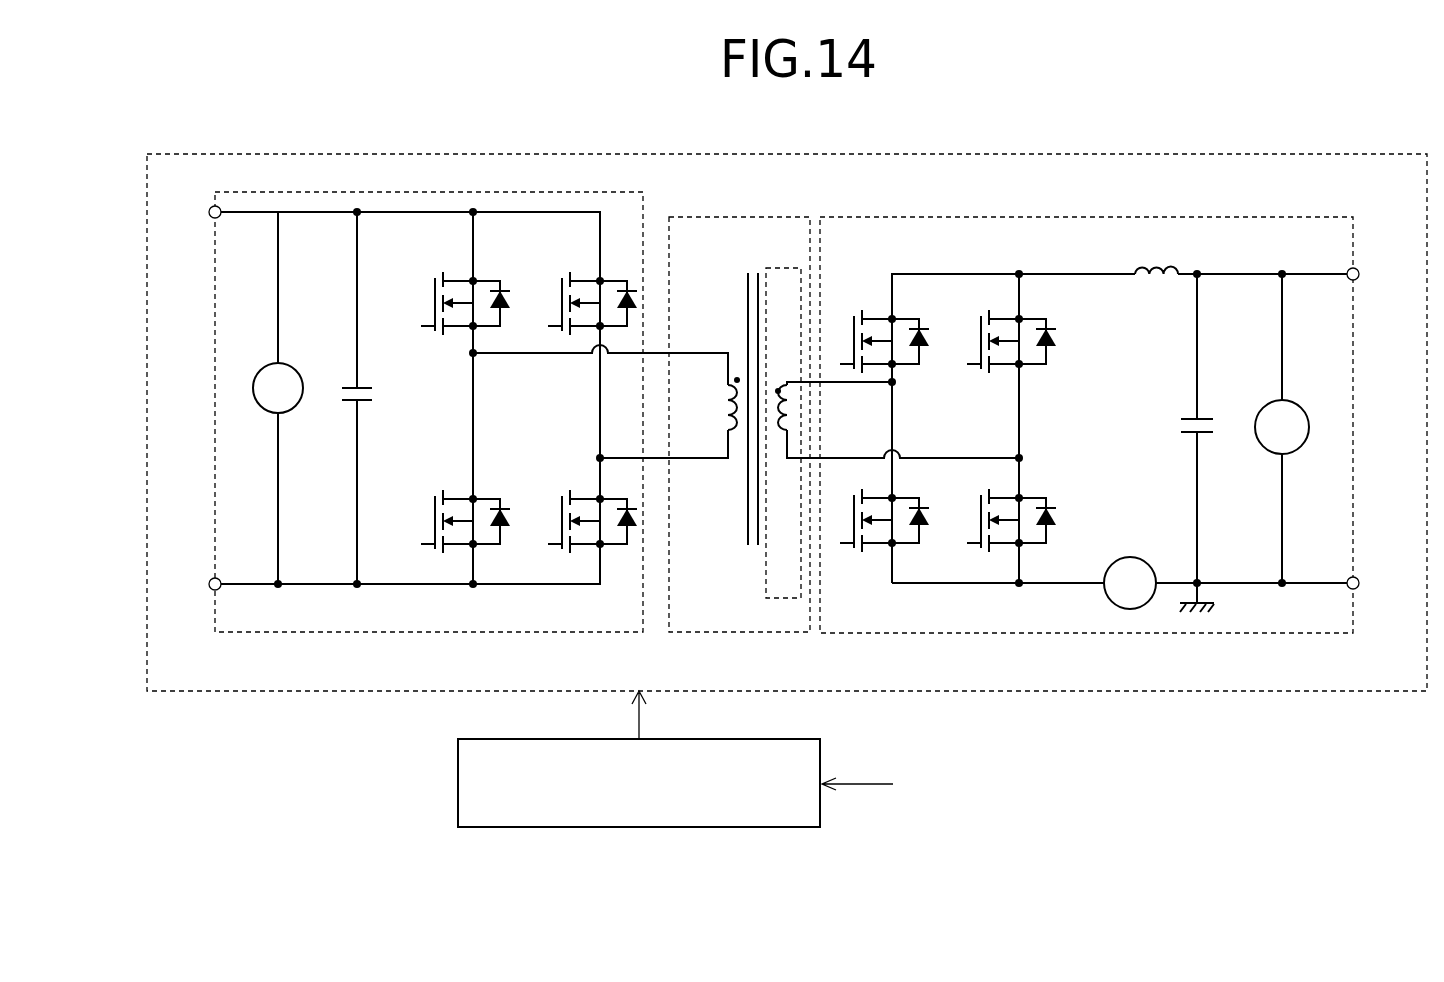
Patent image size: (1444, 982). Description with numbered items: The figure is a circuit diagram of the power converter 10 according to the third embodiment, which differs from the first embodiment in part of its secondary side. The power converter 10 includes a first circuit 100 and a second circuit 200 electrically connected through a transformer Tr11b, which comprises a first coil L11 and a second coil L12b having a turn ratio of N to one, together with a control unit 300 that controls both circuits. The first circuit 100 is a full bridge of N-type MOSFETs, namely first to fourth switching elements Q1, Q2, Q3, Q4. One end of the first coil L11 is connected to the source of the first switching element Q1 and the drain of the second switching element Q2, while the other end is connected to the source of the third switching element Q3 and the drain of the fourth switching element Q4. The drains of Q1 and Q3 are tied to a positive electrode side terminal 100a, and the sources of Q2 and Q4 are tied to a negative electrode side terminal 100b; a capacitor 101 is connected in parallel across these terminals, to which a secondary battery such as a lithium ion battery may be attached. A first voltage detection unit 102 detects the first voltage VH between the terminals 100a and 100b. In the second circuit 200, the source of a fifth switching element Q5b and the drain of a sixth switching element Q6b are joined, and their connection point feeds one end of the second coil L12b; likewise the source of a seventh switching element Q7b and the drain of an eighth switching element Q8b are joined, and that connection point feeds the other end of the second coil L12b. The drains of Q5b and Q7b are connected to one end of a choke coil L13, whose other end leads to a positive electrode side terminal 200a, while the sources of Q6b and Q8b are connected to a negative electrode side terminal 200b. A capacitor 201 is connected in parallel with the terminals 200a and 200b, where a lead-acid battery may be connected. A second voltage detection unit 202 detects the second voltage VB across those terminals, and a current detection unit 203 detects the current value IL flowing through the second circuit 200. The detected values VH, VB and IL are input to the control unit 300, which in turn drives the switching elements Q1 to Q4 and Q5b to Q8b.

The power converter 10 is at (671, 154).
The first circuit 100 is at (597, 192).
The positive electrode side terminal 100a is at (208, 210).
The negative electrode side terminal 100b is at (209, 587).
The capacitor 101 is at (367, 388).
The first voltage detection unit 102 is at (257, 376).
The first switching element Q1 is at (434, 294).
The second switching element Q2 is at (434, 514).
The third switching element Q3 is at (561, 294).
The fourth switching element Q4 is at (561, 514).
The transformer Tr11b is at (740, 216).
The first coil L11 is at (720, 403).
The second coil L12b is at (783, 250).
The second circuit 200 is at (1068, 216).
The positive electrode side terminal 200a is at (1362, 270).
The negative electrode side terminal 200b is at (1358, 588).
The fifth switching element Q5b is at (853, 324).
The sixth switching element Q6b is at (853, 506).
The seventh switching element Q7b is at (980, 324).
The eighth switching element Q8b is at (980, 506).
The choke coil L13 is at (1157, 278).
The capacitor 201 is at (1240, 405).
The second voltage detection unit 202 is at (1301, 410).
The current detection unit 203 is at (1153, 567).
The control unit 300 is at (720, 828).